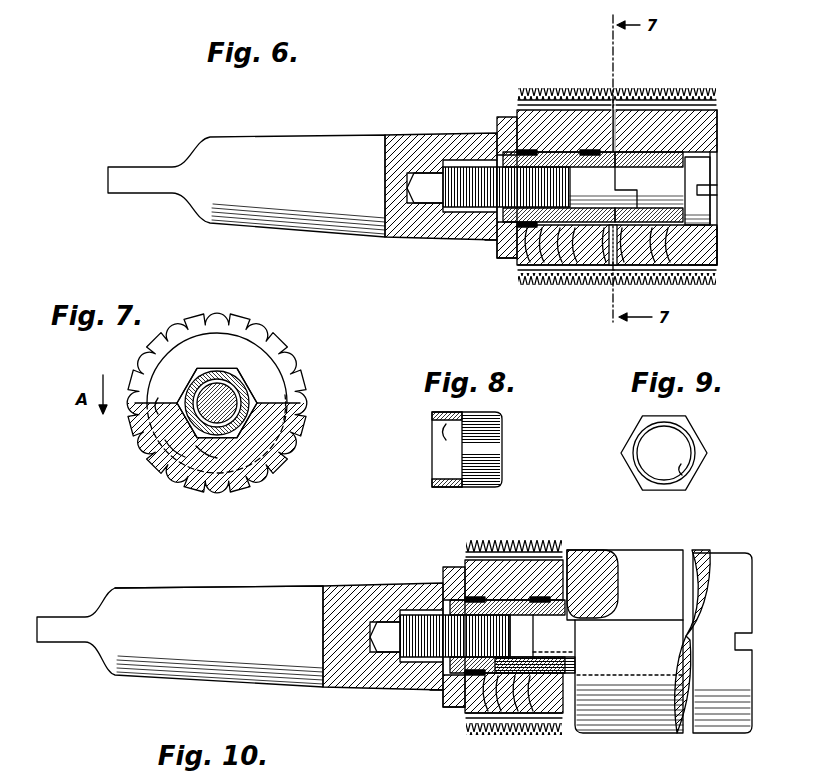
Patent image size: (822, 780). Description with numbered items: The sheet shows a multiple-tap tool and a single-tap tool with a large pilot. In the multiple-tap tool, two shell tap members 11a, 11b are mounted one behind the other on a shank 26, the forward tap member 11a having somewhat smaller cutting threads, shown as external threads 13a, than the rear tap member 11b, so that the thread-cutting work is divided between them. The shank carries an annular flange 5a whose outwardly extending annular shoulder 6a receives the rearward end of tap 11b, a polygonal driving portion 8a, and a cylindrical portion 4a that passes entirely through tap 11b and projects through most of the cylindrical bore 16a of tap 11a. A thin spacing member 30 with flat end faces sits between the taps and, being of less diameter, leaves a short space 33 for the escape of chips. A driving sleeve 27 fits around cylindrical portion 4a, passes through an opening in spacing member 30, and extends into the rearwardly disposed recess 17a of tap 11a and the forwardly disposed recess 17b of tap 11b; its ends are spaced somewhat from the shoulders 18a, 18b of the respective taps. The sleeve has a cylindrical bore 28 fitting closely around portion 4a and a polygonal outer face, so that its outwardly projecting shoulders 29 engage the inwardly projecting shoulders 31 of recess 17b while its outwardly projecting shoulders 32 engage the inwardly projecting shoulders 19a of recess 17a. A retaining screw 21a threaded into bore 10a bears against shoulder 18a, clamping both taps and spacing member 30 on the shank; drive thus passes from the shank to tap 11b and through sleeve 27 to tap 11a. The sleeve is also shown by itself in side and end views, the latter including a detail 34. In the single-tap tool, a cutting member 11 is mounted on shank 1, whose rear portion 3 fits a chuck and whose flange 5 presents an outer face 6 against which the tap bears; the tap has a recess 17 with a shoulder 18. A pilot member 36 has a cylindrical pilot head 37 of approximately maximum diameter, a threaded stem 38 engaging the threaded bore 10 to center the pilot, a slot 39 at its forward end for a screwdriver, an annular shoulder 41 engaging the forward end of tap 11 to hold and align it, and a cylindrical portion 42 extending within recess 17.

In FIG. 6, the shank 26 is at (352, 132).
In FIG. 6, the threaded bore 10a is at (458, 162).
In FIG. 6, the annular flange 5a is at (505, 117).
In FIG. 7, the annular flange 5a is at (287, 374).
In FIG. 6, the annular shoulder 6a is at (500, 247).
In FIG. 6, the tap member 11b is at (536, 90).
In FIG. 7, the tap member 11b is at (291, 335).
In FIG. 6, the tap member 11a is at (720, 94).
In FIG. 6, the recess 17b is at (575, 112).
In FIG. 7, the recess 17b is at (190, 378).
In FIG. 6, the recess 17a is at (707, 144).
In FIG. 7, the recess 17a is at (250, 438).
In FIG. 6, the space 33 is at (612, 106).
In FIG. 6, the cylindrical portion 4a is at (661, 151).
In FIG. 6, the spacing member 30 is at (622, 128).
In FIG. 7, the spacing member 30 is at (292, 405).
In FIG. 6, the retaining screw 21a is at (702, 171).
In FIG. 7, the retaining screw 21a is at (156, 407).
In FIG. 6, the driving portion 8a is at (530, 273).
In FIG. 6, the shoulder 18b is at (551, 273).
In FIG. 6, the driving sleeve 27 is at (599, 266).
In FIG. 7, the driving sleeve 27 is at (170, 446).
In FIG. 8, the driving sleeve 27 is at (488, 411).
In FIG. 9, the driving sleeve 27 is at (692, 426).
In FIG. 6, the shoulder 18a is at (656, 268).
In FIG. 6, the cylindrical bore 16a is at (698, 269).
In FIG. 7, the external threads 13a is at (257, 463).
In FIG. 7, the outwardly projecting shoulders 29 is at (241, 369).
In FIG. 7, the inwardly projecting shoulders 31 is at (216, 365).
In FIG. 7, the inwardly projecting shoulders 19a is at (221, 442).
In FIG. 7, the outwardly projecting shoulders 32 is at (201, 452).
In FIG. 8, the cylindrical bore 28 is at (441, 432).
In FIG. 9, the cylindrical bore 28 is at (684, 471).
In FIG. 9, the opening 34 is at (697, 442).
In FIG. 10, the shank portion 3 is at (240, 597).
In FIG. 10, the shank 1 is at (312, 580).
In FIG. 10, the threaded bore 10 is at (416, 597).
In FIG. 10, the outer face 6 is at (460, 566).
In FIG. 10, the annular flange 5 is at (444, 706).
In FIG. 10, the cutting member 11 is at (530, 530).
In FIG. 10, the recess 17 is at (466, 716).
In FIG. 10, the shoulder 18 is at (490, 716).
In FIG. 10, the threaded stem 38 is at (514, 712).
In FIG. 10, the cylindrical portion 42 is at (553, 652).
In FIG. 10, the annular shoulder 41 is at (571, 597).
In FIG. 10, the pilot member 36 is at (665, 742).
In FIG. 10, the pilot head 37 is at (708, 552).
In FIG. 10, the slot 39 is at (740, 637).